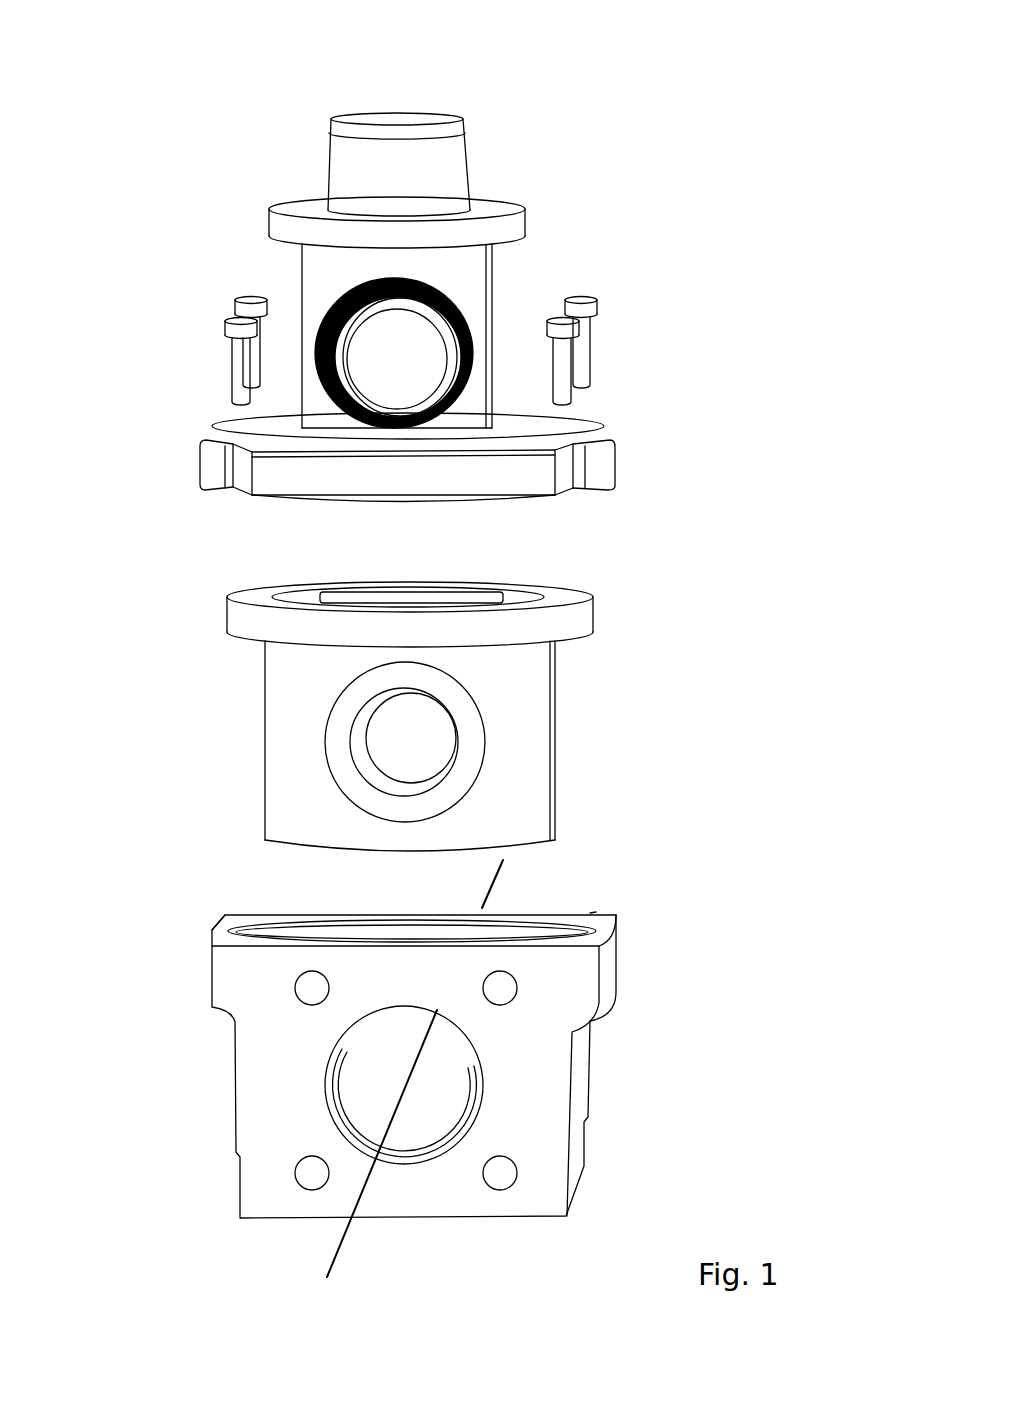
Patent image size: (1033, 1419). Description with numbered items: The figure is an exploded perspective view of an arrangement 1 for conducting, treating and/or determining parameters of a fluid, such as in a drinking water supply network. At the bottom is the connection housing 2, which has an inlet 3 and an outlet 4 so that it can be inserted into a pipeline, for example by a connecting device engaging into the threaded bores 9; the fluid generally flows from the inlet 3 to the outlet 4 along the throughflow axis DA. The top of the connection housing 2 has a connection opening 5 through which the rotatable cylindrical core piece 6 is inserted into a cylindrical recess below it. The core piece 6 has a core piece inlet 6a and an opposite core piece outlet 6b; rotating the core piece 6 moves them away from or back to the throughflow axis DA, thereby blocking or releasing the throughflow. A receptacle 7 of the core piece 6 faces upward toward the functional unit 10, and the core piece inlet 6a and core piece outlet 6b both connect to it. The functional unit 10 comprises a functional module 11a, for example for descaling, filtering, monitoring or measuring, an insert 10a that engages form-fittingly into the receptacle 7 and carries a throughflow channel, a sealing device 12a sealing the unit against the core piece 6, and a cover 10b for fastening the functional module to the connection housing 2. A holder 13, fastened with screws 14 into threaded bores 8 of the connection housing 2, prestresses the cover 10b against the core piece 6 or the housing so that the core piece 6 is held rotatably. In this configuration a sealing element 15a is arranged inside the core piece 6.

The arrangement 1 is at (409, 37).
The connection housing 2 is at (393, 1022).
The inlet 3 is at (320, 1097).
The outlet 4 is at (363, 1110).
The connection opening 5 is at (400, 932).
The core piece 6 is at (410, 702).
The core piece inlet 6a is at (358, 767).
The core piece outlet 6b is at (392, 768).
The receptacle 7 is at (368, 597).
The threaded bores 8 is at (588, 913).
The threaded bores 9 is at (500, 1173).
The functional unit 10 is at (238, 220).
The insert 10a is at (465, 297).
The cover 10b is at (510, 233).
The functional module 11a is at (447, 166).
The sealing device 12a is at (337, 305).
The holder 13 is at (606, 463).
The screws 14 is at (243, 370).
The sealing element 15a is at (470, 753).
The throughflow axis DA is at (333, 1250).